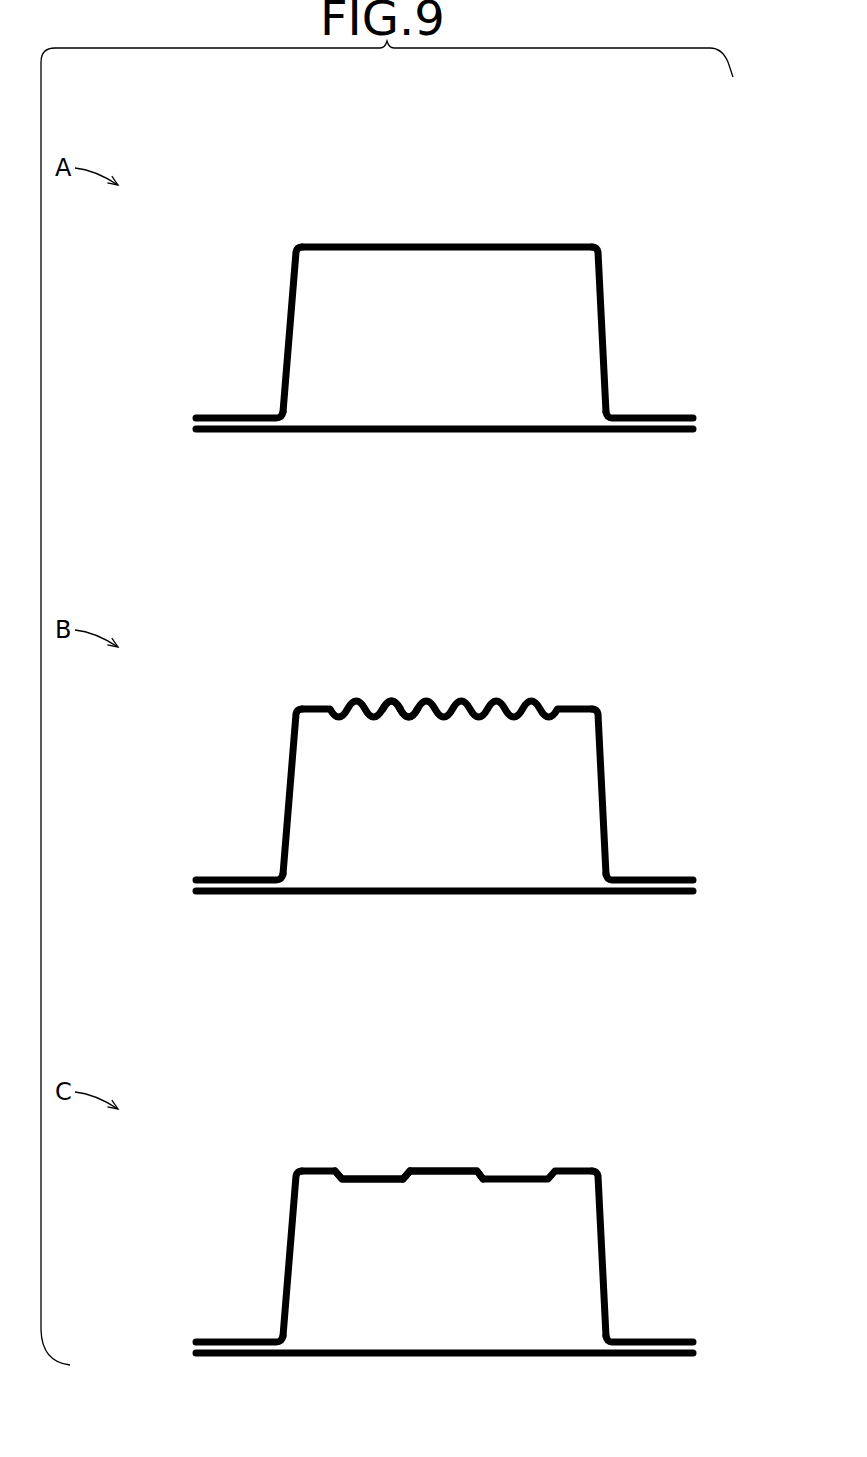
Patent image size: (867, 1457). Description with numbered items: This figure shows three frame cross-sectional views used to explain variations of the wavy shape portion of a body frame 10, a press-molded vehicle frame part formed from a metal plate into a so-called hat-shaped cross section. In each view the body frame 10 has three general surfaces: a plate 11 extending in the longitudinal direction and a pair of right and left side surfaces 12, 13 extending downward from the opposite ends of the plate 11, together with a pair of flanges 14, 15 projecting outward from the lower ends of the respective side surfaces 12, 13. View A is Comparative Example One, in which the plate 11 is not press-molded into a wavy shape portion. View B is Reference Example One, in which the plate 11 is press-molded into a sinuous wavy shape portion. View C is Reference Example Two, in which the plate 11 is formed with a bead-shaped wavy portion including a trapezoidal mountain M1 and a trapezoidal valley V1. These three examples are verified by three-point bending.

The body frame 10 is at (444, 708).
The plate 11 is at (440, 706).
The side surface 12 is at (612, 303).
The side surface 13 is at (277, 303).
The flange 14 is at (655, 410).
The flange 15 is at (234, 410).
The mountain M1 is at (392, 700).
The valley V1 is at (409, 719).